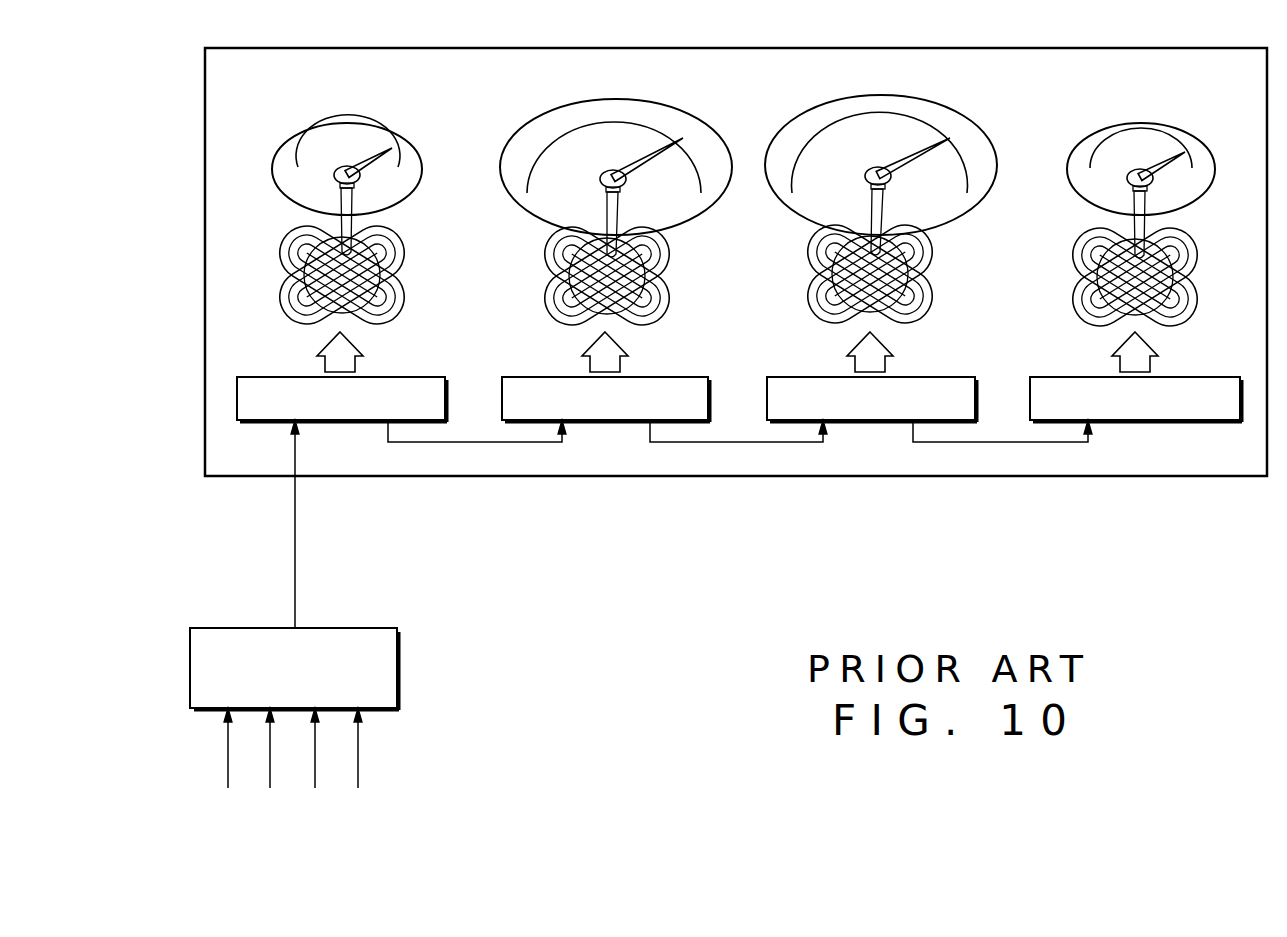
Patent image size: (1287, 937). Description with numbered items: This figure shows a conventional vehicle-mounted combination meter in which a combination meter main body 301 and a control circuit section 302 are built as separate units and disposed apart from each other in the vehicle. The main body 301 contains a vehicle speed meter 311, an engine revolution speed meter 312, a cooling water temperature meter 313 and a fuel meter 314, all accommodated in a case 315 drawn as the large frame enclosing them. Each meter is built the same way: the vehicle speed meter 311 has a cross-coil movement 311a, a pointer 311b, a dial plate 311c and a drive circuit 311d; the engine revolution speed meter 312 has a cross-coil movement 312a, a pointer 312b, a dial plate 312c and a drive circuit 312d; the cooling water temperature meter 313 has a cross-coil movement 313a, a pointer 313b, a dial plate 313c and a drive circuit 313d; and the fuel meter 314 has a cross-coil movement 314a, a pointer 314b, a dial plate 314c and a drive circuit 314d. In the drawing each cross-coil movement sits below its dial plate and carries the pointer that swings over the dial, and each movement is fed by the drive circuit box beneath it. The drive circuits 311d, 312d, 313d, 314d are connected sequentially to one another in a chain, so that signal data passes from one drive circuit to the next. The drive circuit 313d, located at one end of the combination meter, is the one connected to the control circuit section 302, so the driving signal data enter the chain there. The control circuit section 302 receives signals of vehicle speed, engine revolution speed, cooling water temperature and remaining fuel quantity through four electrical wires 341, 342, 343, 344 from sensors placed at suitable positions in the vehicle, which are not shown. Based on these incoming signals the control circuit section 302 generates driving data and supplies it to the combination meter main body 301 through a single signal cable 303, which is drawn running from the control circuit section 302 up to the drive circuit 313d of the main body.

The combination meter main body 301 is at (1128, 48).
The control circuit section 302 is at (338, 628).
The signal cable 303 is at (295, 535).
The vehicle speed meter 311 is at (858, 96).
The cross-coil movement 311a is at (936, 275).
The pointer 311b is at (922, 147).
The dial plate 311c is at (972, 147).
The drive circuit 311d is at (873, 420).
The engine revolution speed meter 312 is at (588, 100).
The cross-coil movement 312a is at (672, 276).
The pointer 312b is at (662, 147).
The dial plate 312c is at (706, 152).
The drive circuit 312d is at (605, 420).
The cooling water temperature meter 313 is at (340, 124).
The cross-coil movement 313a is at (410, 272).
The pointer 313b is at (366, 150).
The dial plate 313c is at (405, 152).
The drive circuit 313d is at (345, 420).
The fuel meter 314 is at (1112, 127).
The cross-coil movement 314a is at (1203, 280).
The pointer 314b is at (1160, 155).
The dial plate 314c is at (1215, 122).
The drive circuit 314d is at (1140, 420).
The case 315 is at (975, 478).
The electrical wire 341 is at (228, 745).
The electrical wire 342 is at (268, 772).
The electrical wire 343 is at (315, 765).
The electrical wire 344 is at (362, 740).